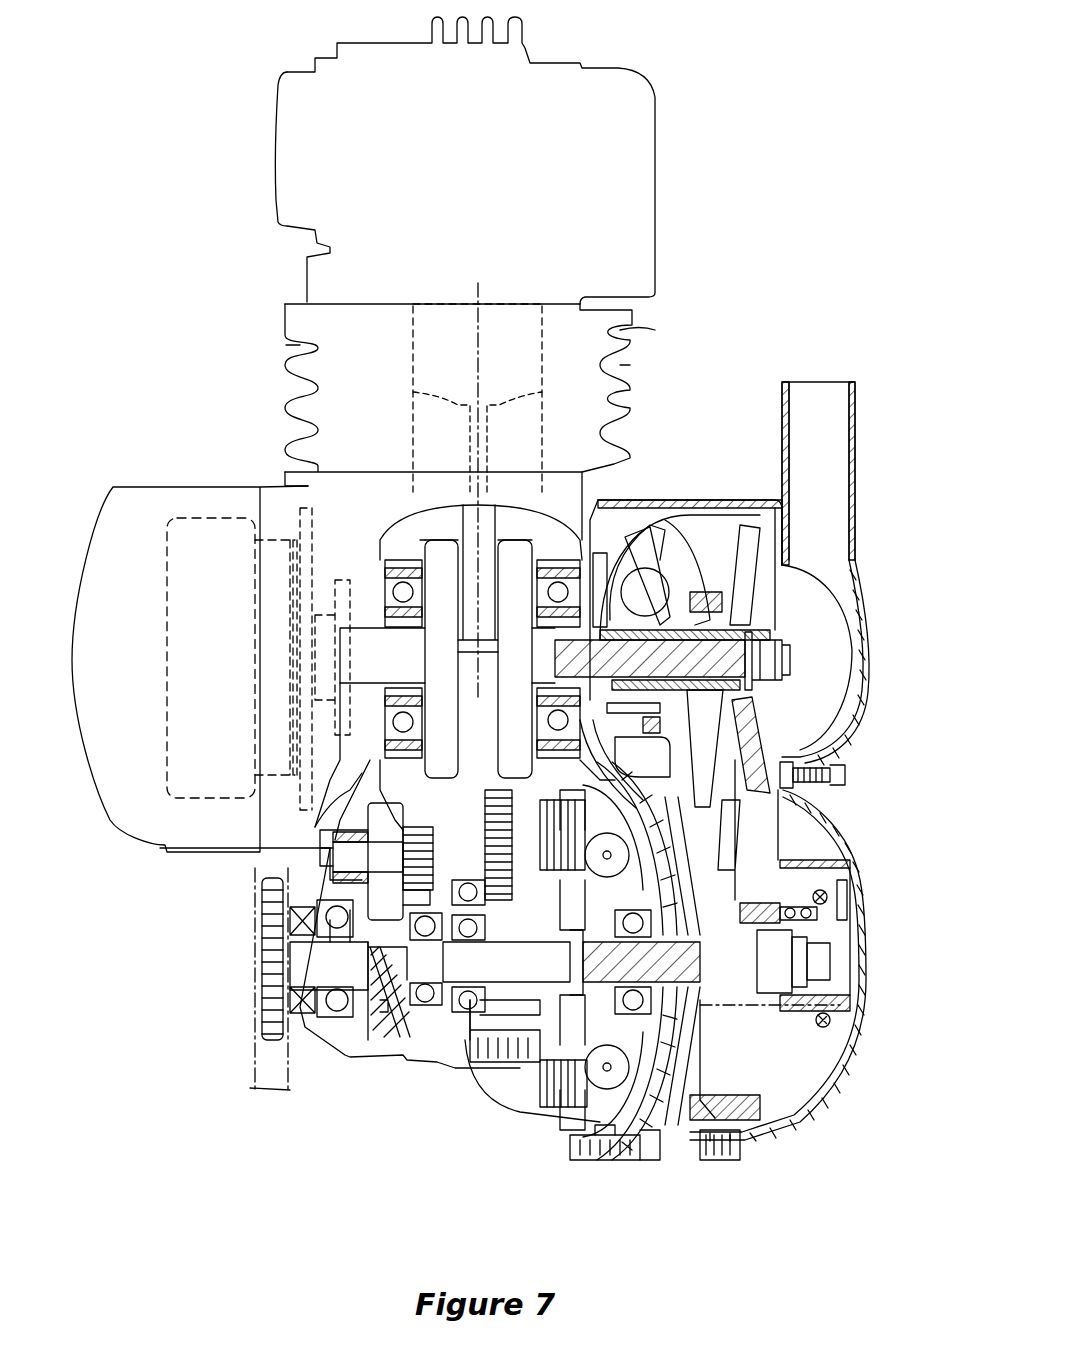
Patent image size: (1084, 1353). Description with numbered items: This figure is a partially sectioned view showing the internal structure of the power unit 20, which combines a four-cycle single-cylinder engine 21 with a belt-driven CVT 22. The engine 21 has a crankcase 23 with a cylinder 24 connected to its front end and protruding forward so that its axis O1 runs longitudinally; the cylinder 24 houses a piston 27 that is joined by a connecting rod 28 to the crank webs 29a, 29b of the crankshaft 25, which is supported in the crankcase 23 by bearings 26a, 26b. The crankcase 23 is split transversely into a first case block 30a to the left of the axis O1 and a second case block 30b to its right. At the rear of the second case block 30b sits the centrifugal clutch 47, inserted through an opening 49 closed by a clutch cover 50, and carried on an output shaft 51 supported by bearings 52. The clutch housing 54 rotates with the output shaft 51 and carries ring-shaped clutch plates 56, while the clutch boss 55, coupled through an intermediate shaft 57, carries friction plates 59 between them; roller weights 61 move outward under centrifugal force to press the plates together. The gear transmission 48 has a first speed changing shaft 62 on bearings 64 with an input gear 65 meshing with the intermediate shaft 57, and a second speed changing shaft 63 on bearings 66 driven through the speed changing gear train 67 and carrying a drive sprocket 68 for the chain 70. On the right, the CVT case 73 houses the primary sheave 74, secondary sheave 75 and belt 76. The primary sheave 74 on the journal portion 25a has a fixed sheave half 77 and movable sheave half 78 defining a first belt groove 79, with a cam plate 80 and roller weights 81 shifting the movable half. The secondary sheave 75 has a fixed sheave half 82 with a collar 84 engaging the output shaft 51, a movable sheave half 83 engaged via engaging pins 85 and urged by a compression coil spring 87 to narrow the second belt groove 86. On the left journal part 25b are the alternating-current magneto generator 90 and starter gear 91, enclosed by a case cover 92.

The power unit 20 is at (674, 87).
The engine 21 is at (270, 462).
The continuously variable transmission (CVT) 22 is at (855, 630).
The crankcase 23 is at (260, 835).
The cylinder 24 is at (656, 332).
The crankshaft 25 is at (405, 660).
The journal portion 25a is at (760, 660).
The journal part 25b is at (340, 600).
The bearing 26a is at (400, 580).
The bearing 26b is at (550, 540).
The piston 27 is at (442, 304).
The connecting rod 28 is at (440, 520).
The crank web 29a is at (440, 530).
The crank web 29b is at (512, 530).
The first case block 30a is at (300, 460).
The second case block 30b is at (615, 470).
The centrifugal clutch 47 is at (512, 1108).
The gear transmission 48 is at (393, 1045).
The opening 49 is at (590, 1160).
The clutch cover 50 is at (660, 1150).
The output shaft 51 is at (540, 1060).
The bearings 52 is at (668, 870).
The clutch housing 54 is at (622, 1160).
The clutch boss 55 is at (545, 1010).
The clutch plates 56 is at (560, 820).
The intermediate shaft 57 is at (520, 935).
The friction plates 59 is at (560, 1115).
The roller weights 61 is at (640, 830).
The first speed changing shaft 62 is at (392, 875).
The second speed changing shaft 63 is at (320, 965).
The bearings 64 is at (460, 845).
The input gear 65 is at (470, 820).
The bearings 66 is at (320, 912).
The speed changing gear train 67 is at (400, 835).
The drive sprocket 68 is at (270, 1018).
The chain 70 is at (270, 1073).
The CVT case 73 is at (866, 680).
The primary sheave 74 is at (672, 445).
The secondary sheave 75 is at (715, 1205).
The belt 76 is at (702, 592).
The fixed sheave half 77 is at (748, 535).
The movable sheave half 78 is at (690, 540).
The first belt groove 79 is at (745, 702).
The cam plate 80 is at (618, 600).
The roller weights 81 is at (628, 560).
The fixed sheave half 82 is at (725, 1160).
The movable sheave half 83 is at (750, 1120).
The collar 84 is at (752, 930).
The engaging pins 85 is at (785, 895).
The second belt groove 86 is at (745, 815).
The compression coil spring 87 is at (812, 1060).
The alternating-current magneto generator 90 is at (185, 660).
The starter gear 91 is at (300, 593).
The case cover 92 is at (118, 510).
The axis O1 is at (490, 304).